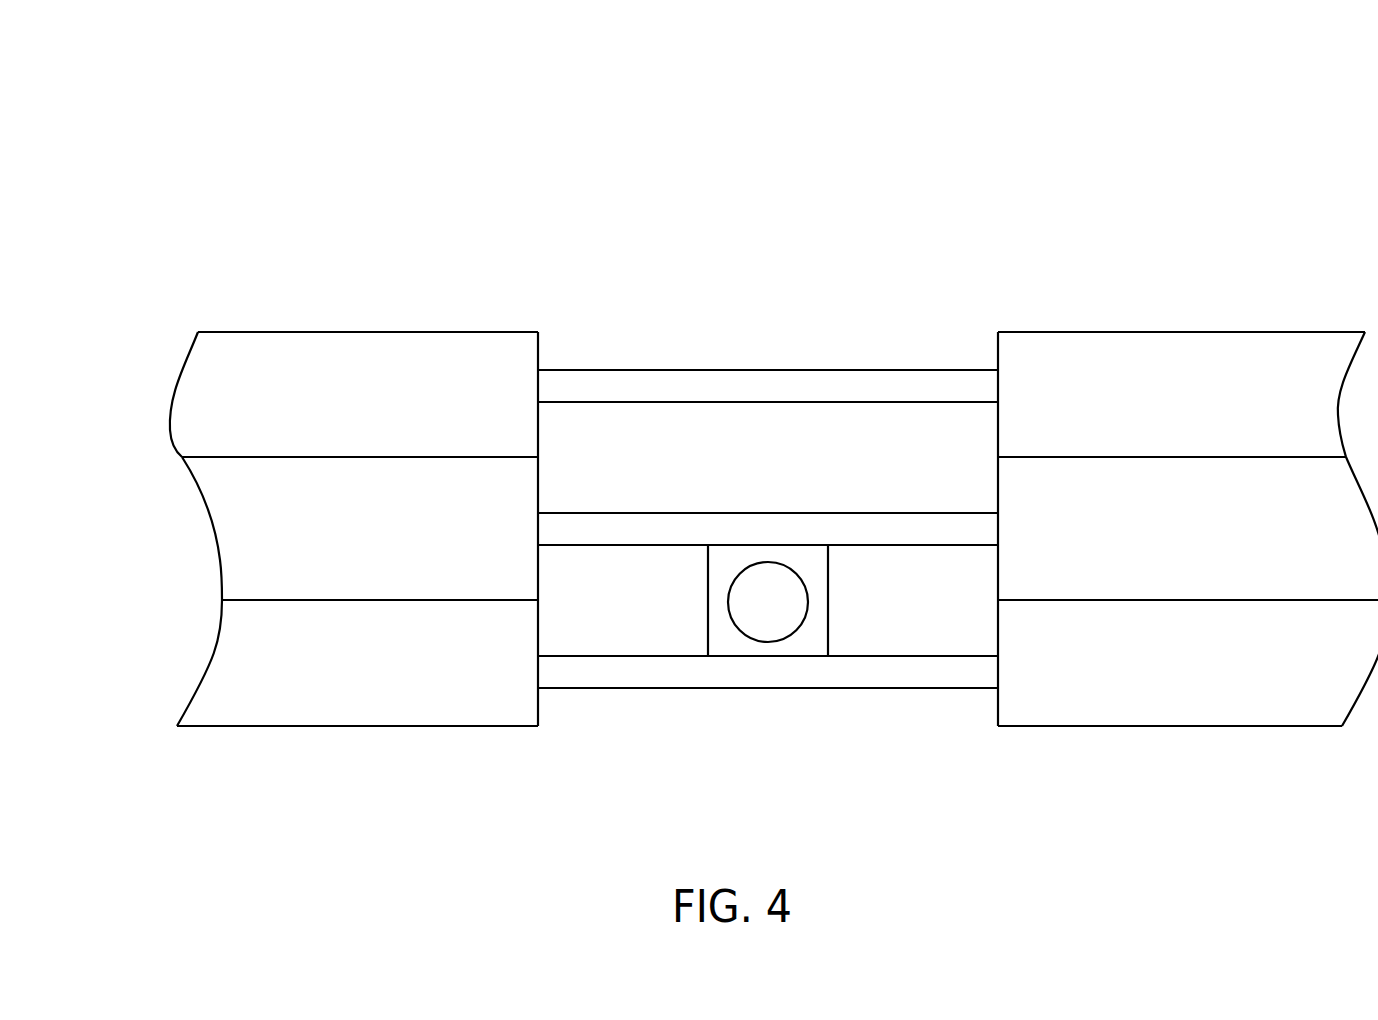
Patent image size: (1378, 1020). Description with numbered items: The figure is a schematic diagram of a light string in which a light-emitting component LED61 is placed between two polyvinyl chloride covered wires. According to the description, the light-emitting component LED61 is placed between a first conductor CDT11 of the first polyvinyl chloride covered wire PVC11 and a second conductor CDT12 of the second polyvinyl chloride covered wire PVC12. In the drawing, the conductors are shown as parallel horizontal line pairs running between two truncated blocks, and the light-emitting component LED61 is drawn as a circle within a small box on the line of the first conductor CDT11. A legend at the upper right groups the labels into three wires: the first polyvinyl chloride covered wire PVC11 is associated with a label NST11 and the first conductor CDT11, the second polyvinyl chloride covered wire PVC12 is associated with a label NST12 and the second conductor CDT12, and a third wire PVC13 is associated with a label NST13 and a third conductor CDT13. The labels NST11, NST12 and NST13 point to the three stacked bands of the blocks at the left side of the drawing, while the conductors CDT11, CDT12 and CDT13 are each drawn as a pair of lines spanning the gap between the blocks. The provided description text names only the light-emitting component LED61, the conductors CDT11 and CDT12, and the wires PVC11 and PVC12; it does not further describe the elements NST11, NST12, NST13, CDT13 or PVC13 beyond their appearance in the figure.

The first non-sensing/display stripe region NST11 is at (220, 677).
The second non-sensing/display stripe region NST12 is at (232, 545).
The third non-sensing/display stripe region NST13 is at (192, 402).
The first conductor CDT11 is at (607, 673).
The second conductor CDT12 is at (607, 533).
The third conductive trace pair CDT13 is at (607, 388).
The light-emitting component LED61 is at (812, 602).
The first polyvinyl chloride covered wire PVC11 is at (1156, 5).
The second polyvinyl chloride covered wire PVC12 is at (1156, 110).
The third pixel/via column unit PVC13 is at (1156, 215).